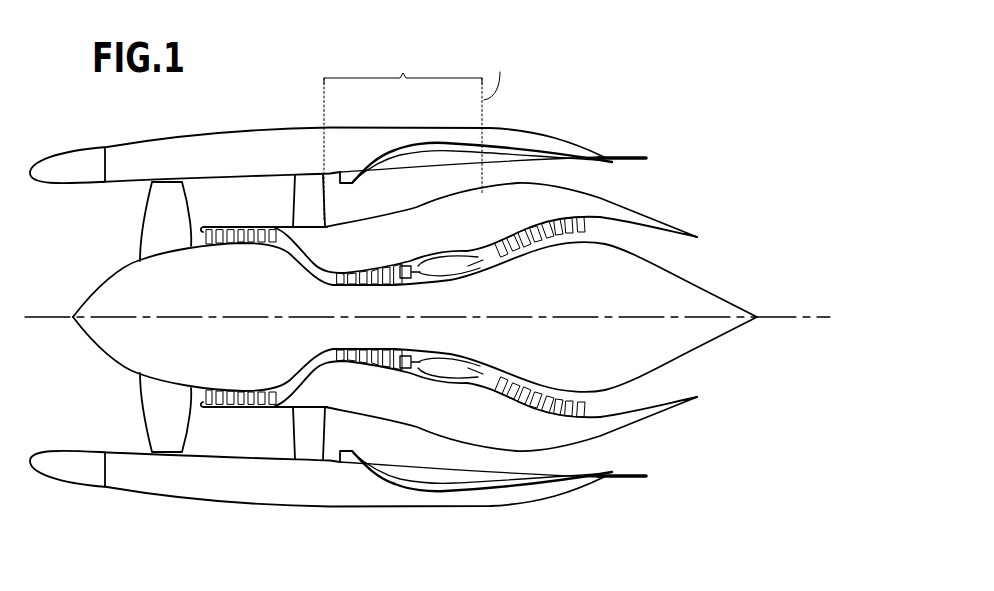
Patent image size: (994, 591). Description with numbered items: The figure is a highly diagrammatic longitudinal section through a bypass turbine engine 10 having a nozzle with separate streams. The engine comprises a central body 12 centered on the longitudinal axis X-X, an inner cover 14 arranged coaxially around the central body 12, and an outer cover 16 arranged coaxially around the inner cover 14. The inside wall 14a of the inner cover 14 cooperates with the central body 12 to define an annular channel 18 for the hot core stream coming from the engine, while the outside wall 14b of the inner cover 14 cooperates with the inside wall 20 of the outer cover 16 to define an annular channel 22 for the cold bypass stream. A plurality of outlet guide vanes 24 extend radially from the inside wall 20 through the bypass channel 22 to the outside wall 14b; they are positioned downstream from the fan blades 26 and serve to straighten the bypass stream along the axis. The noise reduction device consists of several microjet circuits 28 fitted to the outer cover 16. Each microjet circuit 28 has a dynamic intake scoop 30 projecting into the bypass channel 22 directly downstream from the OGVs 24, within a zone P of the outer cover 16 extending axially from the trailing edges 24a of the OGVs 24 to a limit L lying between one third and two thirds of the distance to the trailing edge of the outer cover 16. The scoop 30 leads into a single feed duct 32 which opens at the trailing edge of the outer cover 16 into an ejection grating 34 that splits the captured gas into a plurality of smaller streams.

The turbine engine 10 is at (336, 63).
The central body 12 is at (710, 276).
The inner cover 14 is at (648, 200).
The inside wall of the inner cover 14a is at (673, 236).
The outside wall of the inner cover 14b is at (525, 182).
The outer cover 16 is at (550, 125).
The annular channel for the core stream 18 is at (642, 236).
The inside wall of the outer cover 20 is at (500, 161).
The annular channel for the bypass stream 22 is at (411, 201).
The outlet guide vanes 24 is at (295, 197).
The trailing edges of the OGVs 24a is at (325, 210).
The fan blades 26 is at (155, 227).
The microjet circuit 28 is at (435, 142).
The intake scoop 30 is at (352, 168).
The feed duct 32 is at (520, 147).
The ejection grating 34 is at (626, 156).